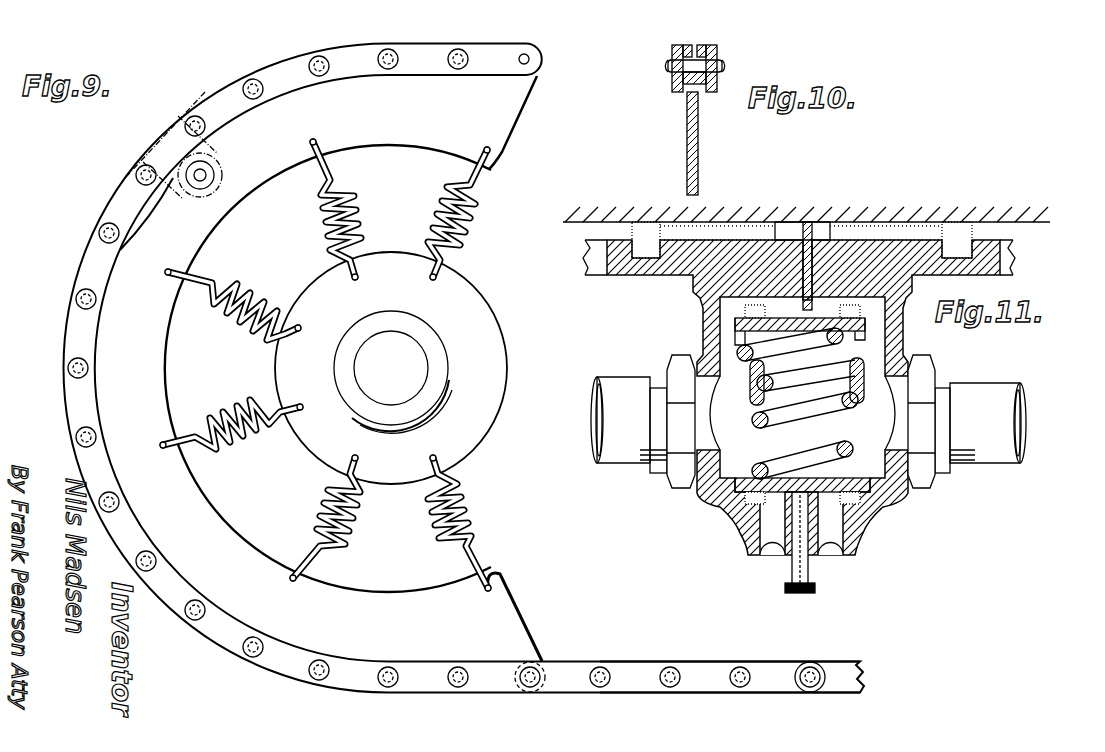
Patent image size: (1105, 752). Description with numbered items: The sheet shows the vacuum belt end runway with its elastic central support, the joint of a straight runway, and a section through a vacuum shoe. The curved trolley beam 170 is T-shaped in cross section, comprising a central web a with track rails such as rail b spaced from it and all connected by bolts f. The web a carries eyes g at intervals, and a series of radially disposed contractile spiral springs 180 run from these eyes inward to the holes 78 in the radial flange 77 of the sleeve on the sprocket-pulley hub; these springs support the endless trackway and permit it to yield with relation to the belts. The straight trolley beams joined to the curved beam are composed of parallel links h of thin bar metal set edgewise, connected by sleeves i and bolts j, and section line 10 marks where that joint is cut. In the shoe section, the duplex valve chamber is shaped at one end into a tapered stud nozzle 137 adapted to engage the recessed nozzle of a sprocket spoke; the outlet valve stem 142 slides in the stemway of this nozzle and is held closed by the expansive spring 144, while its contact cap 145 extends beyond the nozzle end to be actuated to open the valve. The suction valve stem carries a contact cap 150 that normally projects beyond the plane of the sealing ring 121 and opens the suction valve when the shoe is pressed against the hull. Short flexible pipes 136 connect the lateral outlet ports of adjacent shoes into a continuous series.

In FIG. 9, the curved trolley beam 170 is at (66, 392).
In FIG. 9, the contractile spiral springs 180 is at (322, 222).
In FIG. 9, the radial flange 77 is at (492, 350).
In FIG. 9, the holes 78 is at (422, 281).
In FIG. 9, the section line 10 is at (532, 730).
In FIG. 9, the central web a is at (520, 110).
In FIG. 10, the central web a is at (688, 123).
In FIG. 9, the track rail b is at (500, 52).
In FIG. 9, the bolts f is at (461, 50).
In FIG. 9, the eyes g is at (318, 140).
In FIG. 9, the parallel links h is at (636, 667).
In FIG. 10, the parallel links h is at (672, 48).
In FIG. 9, the sleeves i is at (800, 668).
In FIG. 10, the sleeves i is at (686, 48).
In FIG. 10, the bolts j is at (722, 66).
In FIG. 11, the contact cap 150 is at (804, 238).
In FIG. 11, the packing or sealing ring 121 is at (957, 225).
In FIG. 11, the short flexible pipes 136 is at (605, 410).
In FIG. 11, the expansive spring 144 is at (808, 456).
In FIG. 11, the tapered stud nozzle 137 is at (868, 522).
In FIG. 11, the stem 142 is at (790, 572).
In FIG. 11, the contact cap 145 is at (812, 588).